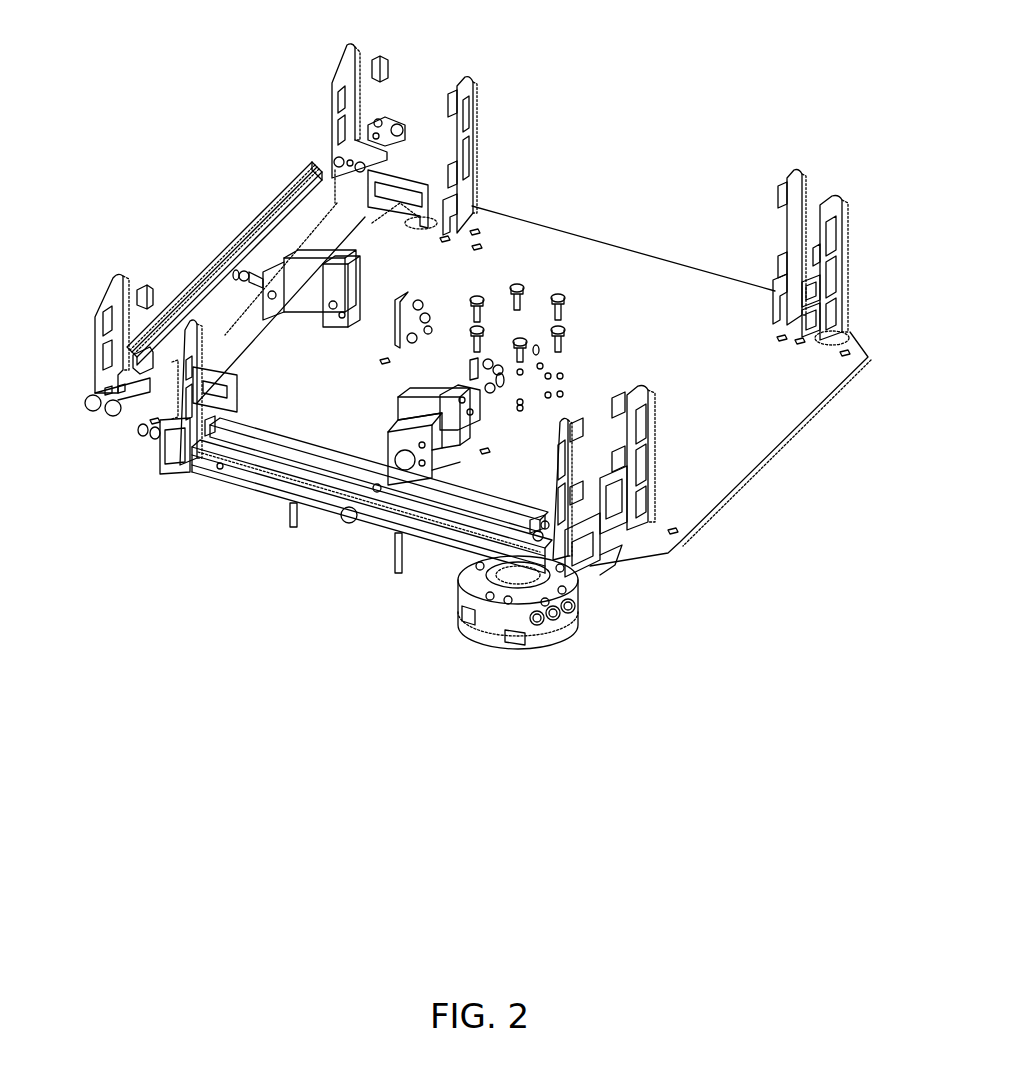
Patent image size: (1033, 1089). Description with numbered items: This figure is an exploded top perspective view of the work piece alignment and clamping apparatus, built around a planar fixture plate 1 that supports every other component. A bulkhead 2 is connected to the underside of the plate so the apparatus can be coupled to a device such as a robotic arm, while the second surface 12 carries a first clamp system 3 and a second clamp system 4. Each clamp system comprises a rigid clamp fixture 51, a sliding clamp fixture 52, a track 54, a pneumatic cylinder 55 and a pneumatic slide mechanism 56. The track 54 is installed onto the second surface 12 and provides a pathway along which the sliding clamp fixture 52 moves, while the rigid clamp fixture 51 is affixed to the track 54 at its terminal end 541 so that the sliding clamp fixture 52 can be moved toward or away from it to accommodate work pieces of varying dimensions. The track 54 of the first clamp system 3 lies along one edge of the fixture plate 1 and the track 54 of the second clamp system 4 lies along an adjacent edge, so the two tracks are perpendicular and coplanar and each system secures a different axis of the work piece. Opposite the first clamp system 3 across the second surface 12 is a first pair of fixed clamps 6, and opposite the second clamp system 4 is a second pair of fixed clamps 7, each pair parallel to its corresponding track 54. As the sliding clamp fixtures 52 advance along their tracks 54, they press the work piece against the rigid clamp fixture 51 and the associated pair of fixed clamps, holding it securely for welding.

The fixture plate 1 is at (781, 494).
The bulkhead 2 is at (516, 653).
The first clamp system 3 is at (322, 532).
The second clamp system 4 is at (178, 240).
The first pair of fixed clamps 6 is at (470, 90).
The second pair of fixed clamps 7 is at (833, 216).
The second surface 12 is at (569, 253).
The rigid clamp fixture 51 is at (348, 66).
The sliding clamp fixture 52 is at (110, 295).
The track 54 is at (271, 454).
The pneumatic cylinder 55 is at (400, 422).
The pneumatic slide mechanism 56 is at (243, 249).
The terminal end 541 is at (333, 162).